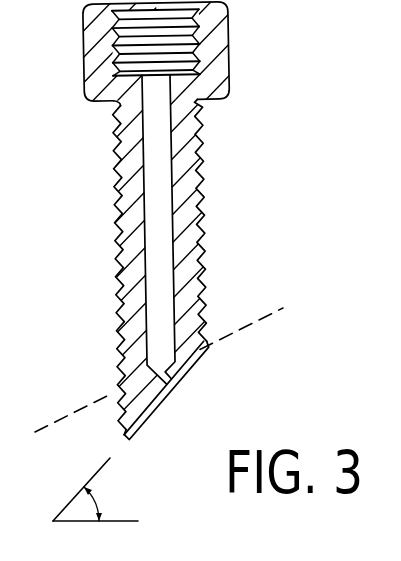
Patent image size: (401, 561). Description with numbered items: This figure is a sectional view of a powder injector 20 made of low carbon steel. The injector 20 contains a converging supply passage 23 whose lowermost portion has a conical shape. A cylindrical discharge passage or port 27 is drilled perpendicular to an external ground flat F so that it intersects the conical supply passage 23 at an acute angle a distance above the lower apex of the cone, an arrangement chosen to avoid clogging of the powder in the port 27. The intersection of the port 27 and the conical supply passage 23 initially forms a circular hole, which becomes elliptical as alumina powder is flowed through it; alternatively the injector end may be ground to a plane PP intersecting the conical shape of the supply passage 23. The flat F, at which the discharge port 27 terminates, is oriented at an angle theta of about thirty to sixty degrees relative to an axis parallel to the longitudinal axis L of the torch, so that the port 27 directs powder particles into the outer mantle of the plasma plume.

The injector 20 is at (210, 190).
The converging supply passage 23 is at (167, 275).
The discharge passage or port 27 is at (176, 385).
The flat F is at (160, 396).
The plane PP is at (66, 412).
The longitudinal axis L is at (110, 521).